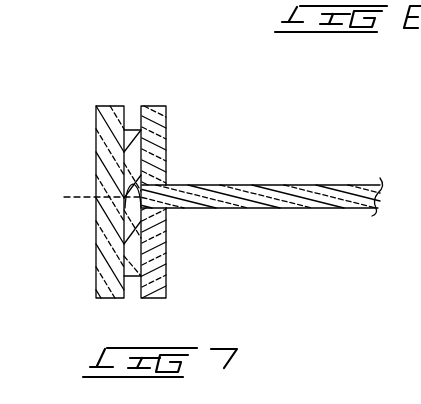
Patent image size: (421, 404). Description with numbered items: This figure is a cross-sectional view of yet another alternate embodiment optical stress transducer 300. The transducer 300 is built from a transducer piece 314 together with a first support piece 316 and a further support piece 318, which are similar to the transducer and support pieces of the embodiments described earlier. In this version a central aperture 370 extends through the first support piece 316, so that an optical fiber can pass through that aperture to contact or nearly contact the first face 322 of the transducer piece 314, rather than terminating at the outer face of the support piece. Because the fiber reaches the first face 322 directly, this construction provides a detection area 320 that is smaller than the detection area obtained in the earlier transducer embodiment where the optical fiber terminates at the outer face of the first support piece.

The optical stress transducer 300 is at (161, 86).
The transducer piece 314 is at (132, 129).
The first support piece 316 is at (160, 120).
The support piece 318 is at (103, 107).
The detection area 320 is at (85, 199).
The first face 322 is at (156, 160).
The central aperture 370 is at (161, 178).